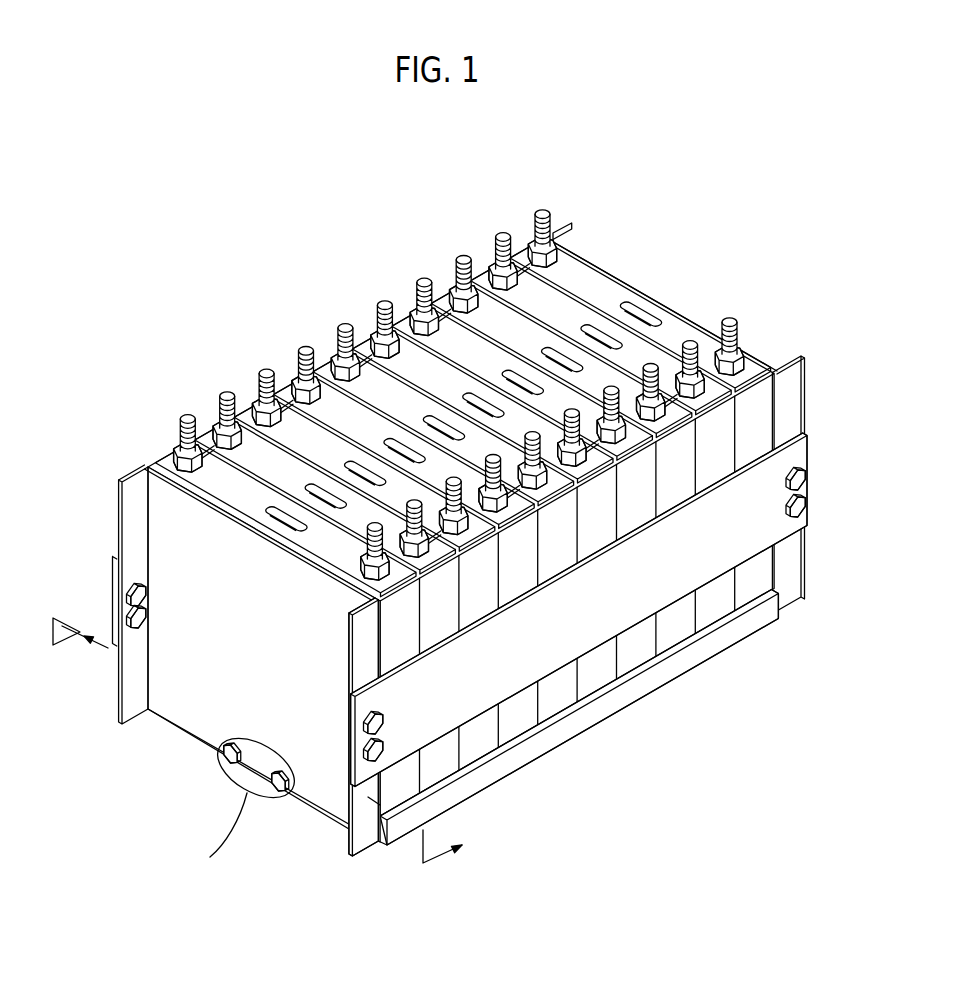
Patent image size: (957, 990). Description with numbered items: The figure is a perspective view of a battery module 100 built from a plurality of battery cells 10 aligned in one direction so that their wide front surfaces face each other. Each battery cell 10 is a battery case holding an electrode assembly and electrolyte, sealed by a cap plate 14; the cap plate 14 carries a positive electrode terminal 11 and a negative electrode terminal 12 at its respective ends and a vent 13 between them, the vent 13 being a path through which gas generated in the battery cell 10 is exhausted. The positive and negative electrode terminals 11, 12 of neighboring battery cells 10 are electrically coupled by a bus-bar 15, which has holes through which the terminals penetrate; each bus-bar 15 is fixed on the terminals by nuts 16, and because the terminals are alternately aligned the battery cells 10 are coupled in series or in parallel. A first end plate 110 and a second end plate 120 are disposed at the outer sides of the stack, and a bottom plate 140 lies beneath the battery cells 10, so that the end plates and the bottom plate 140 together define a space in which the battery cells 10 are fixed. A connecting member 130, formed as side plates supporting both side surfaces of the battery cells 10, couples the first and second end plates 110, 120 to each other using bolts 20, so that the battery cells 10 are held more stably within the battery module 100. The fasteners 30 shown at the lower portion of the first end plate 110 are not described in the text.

The battery module 100 is at (218, 238).
The battery cell 10 is at (437, 615).
The positive electrode terminal 11 is at (544, 214).
The negative electrode terminal 12 is at (730, 322).
The vent 13 is at (641, 314).
The cap plate 14 is at (588, 281).
The bus-bar 15 is at (212, 436).
The nut 16 is at (259, 402).
The bolt 20 is at (384, 751).
The fixing bolt 30 is at (278, 785).
The first end plate 110 is at (166, 663).
The second end plate 120 is at (753, 340).
The connecting member 130 is at (108, 556).
The bottom plate 140 is at (563, 750).